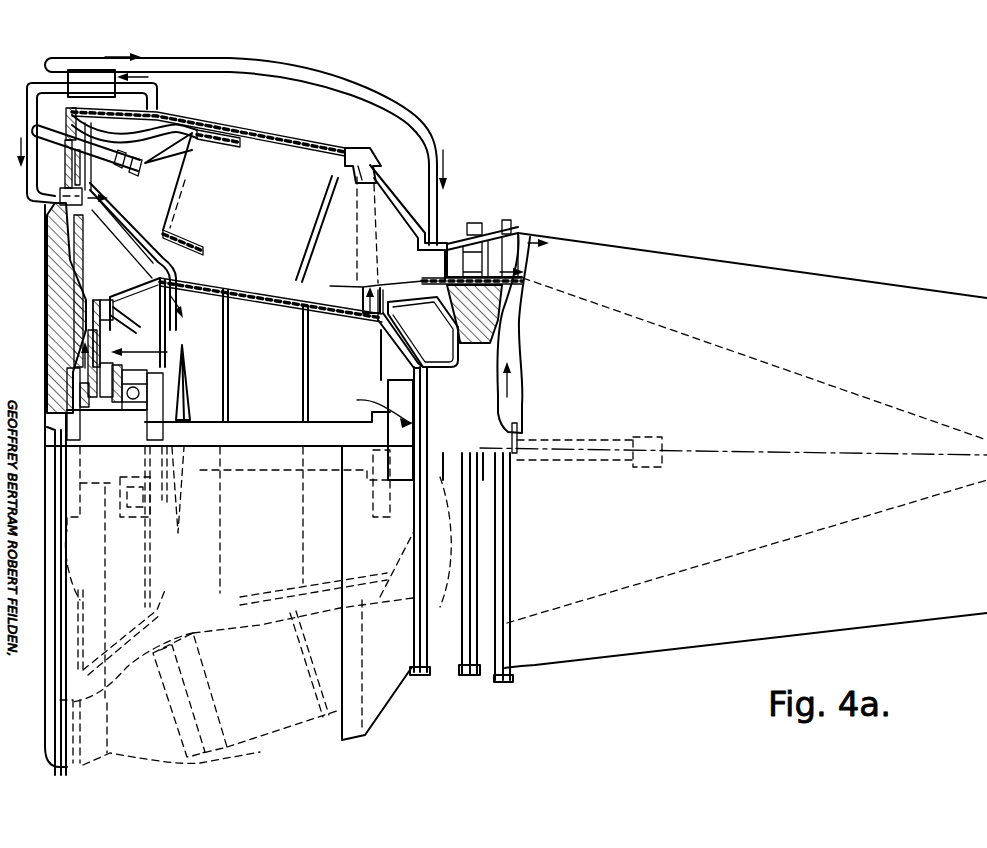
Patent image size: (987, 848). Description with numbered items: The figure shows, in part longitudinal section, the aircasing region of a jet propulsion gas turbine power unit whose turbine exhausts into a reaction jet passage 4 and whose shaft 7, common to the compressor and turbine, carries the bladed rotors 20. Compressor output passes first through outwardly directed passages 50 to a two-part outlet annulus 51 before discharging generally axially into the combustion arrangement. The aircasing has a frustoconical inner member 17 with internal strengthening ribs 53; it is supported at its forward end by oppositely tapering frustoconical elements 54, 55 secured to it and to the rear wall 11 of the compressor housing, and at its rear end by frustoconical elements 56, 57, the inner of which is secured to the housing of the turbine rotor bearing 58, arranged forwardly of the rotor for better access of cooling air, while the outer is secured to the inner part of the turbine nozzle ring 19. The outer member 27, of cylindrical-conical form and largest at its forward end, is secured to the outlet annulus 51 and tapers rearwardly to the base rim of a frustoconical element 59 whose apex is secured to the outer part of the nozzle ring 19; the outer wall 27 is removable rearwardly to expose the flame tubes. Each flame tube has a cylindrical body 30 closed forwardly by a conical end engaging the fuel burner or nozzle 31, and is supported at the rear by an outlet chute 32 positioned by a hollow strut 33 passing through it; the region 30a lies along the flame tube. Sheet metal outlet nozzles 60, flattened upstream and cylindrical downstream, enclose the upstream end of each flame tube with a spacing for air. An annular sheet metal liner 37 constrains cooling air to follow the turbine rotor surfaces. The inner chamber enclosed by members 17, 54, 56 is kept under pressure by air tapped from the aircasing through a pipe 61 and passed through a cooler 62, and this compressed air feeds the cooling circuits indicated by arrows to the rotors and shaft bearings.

The reaction jet passage 4 is at (517, 247).
The shaft 7 is at (287, 426).
The rear wall of the compressor housing 11 is at (85, 327).
The inner member of the aircasing 17 is at (253, 300).
The turbine nozzle ring 19 is at (433, 261).
The bladed rotors 20 is at (488, 418).
The outer member of the aircasing 27 is at (283, 150).
The flame tube body 30 is at (238, 162).
The combustion chamber baffle 30a is at (338, 207).
The fuel burner or nozzle 31 is at (183, 181).
The outlet chute 32 is at (393, 233).
The hollow strut 33 is at (373, 183).
The stationary sheet metal liner 37 is at (453, 333).
The outwardly directed passages 50 is at (55, 306).
The two-part outlet annulus 51 is at (80, 140).
The internal strengthening ribs 53 is at (298, 365).
The inwardly directed frustoconical element 54 is at (133, 288).
The outwardly directed frustoconical element 55 is at (100, 237).
The inner rear frustoconical element 56 is at (395, 337).
The outer rear frustoconical element 57 is at (416, 302).
The turbine rotor bearing 58 is at (402, 397).
The frustoconical element 59 is at (378, 201).
The sheet metal outlet nozzles 60 is at (157, 119).
The pipe 61 is at (258, 80).
The cooler 62 is at (91, 83).